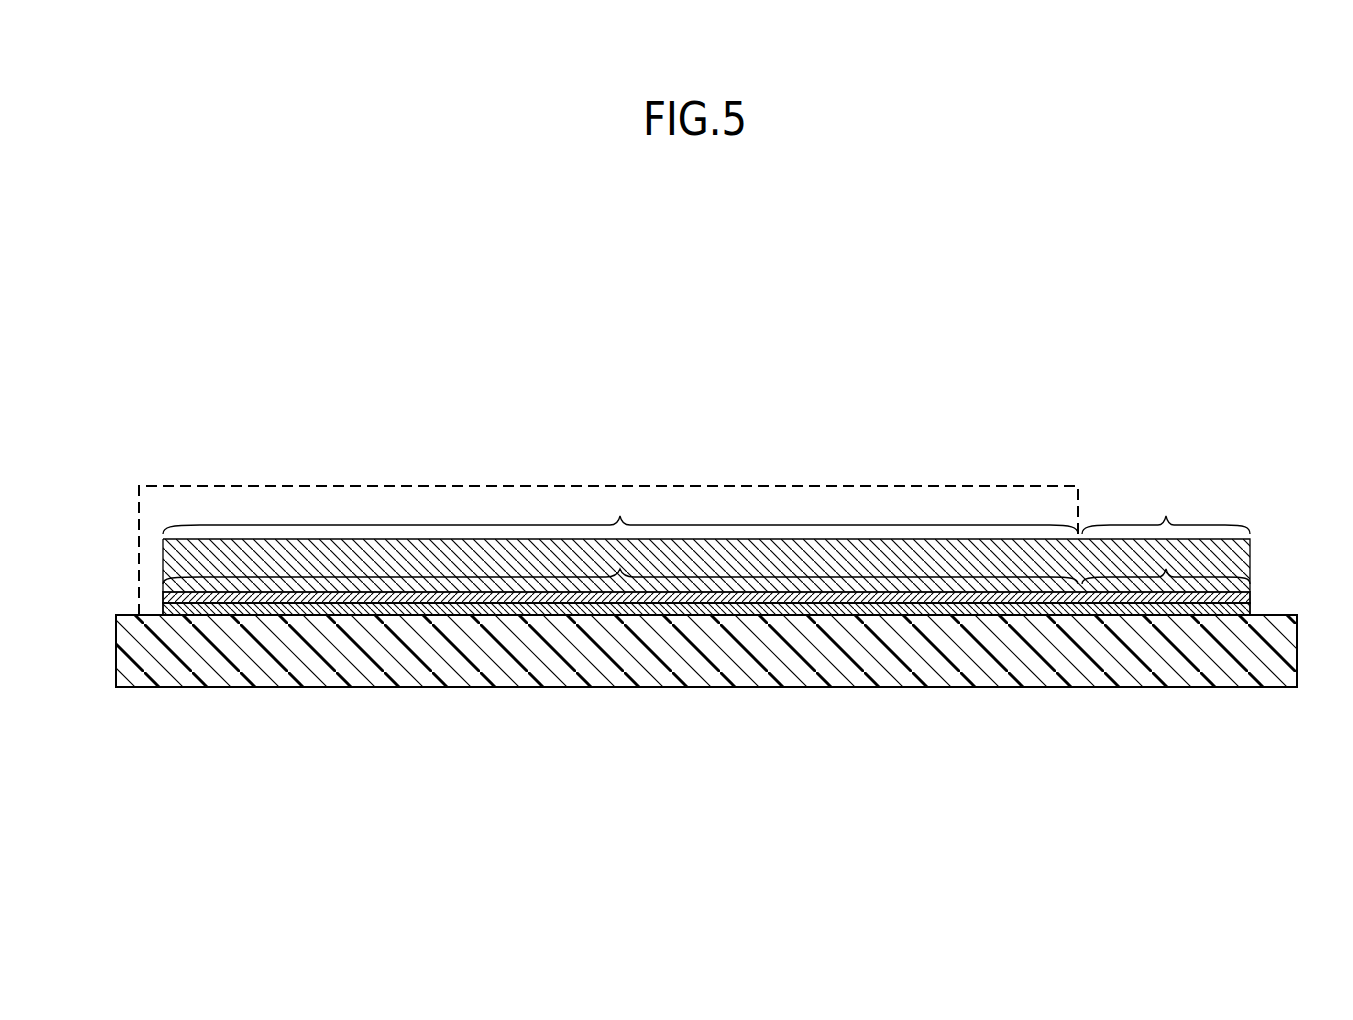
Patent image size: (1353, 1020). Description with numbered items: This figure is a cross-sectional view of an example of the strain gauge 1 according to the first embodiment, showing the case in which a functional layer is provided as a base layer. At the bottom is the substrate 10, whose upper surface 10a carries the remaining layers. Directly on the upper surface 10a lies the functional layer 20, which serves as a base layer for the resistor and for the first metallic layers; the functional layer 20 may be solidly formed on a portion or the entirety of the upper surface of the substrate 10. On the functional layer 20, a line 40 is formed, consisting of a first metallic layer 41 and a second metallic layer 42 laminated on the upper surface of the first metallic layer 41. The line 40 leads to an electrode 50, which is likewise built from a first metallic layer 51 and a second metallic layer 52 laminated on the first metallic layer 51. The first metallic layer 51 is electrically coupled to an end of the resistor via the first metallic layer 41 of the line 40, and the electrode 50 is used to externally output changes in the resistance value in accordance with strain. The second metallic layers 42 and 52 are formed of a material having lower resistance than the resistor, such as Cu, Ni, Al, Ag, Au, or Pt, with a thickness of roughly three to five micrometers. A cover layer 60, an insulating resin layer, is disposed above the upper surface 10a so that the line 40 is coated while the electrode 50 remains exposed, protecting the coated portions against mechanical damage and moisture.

The strain gauge 1 is at (701, 562).
The substrate 10 is at (622, 673).
The upper surface of the substrate 10a is at (1273, 615).
The functional layer 20 is at (458, 610).
The line 40 is at (620, 470).
The first metallic layer 41 is at (621, 570).
The second metallic layer 42 is at (620, 516).
The electrode 50 is at (1164, 470).
The first metallic layer 51 is at (1166, 572).
The second metallic layer 52 is at (1166, 516).
The cover layer 60 is at (977, 485).